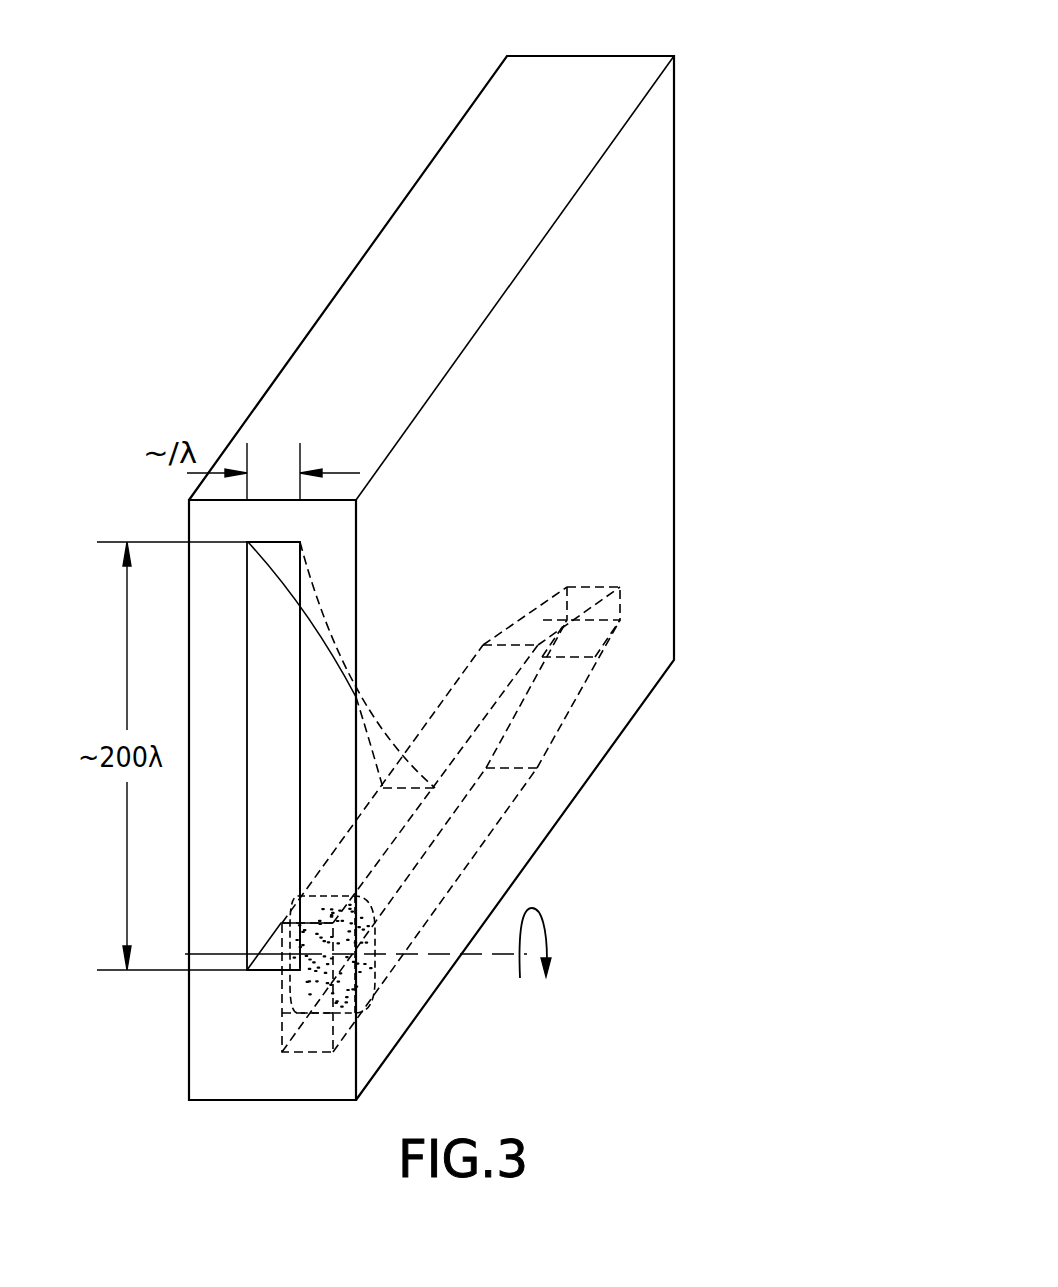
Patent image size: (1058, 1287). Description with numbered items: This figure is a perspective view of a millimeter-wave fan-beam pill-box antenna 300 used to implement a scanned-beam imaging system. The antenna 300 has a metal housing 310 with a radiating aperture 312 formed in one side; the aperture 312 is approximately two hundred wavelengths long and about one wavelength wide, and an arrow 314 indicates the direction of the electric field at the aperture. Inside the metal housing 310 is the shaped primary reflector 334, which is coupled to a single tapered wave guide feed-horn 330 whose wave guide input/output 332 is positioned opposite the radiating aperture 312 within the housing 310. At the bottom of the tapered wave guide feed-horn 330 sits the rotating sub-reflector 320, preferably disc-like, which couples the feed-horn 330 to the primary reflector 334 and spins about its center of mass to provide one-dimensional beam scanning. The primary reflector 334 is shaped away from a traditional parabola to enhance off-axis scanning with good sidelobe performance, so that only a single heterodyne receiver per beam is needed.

The pill-box antenna 300 is at (717, 133).
The metal housing 310 is at (613, 363).
The radiating aperture 312 is at (260, 727).
The arrow 314 is at (247, 669).
The rotating sub-reflector 320 is at (397, 930).
The tapered wave guide feed-horn 330 is at (571, 703).
The wave guide input/output 332 is at (646, 594).
The primary reflector 334 is at (395, 637).